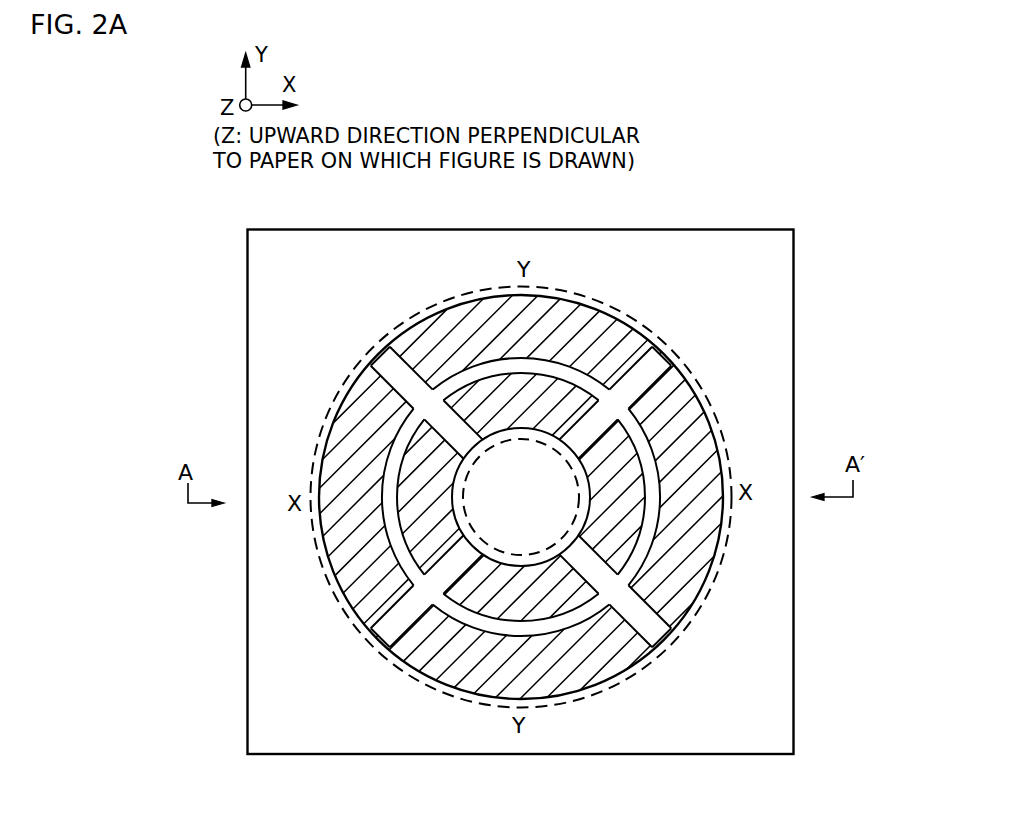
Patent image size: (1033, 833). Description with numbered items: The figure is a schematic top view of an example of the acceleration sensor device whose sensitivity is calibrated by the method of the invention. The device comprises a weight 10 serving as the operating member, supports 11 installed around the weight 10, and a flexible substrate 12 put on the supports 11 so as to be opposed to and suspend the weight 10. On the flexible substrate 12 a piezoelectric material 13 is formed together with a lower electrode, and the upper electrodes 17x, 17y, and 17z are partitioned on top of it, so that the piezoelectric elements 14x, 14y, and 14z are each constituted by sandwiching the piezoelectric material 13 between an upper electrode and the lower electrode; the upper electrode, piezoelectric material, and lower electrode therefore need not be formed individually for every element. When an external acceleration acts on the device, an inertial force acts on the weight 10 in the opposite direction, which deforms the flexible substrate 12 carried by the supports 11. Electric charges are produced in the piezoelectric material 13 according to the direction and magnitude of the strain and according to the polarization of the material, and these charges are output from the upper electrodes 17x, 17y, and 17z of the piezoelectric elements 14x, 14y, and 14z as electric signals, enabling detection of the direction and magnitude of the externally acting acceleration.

The weight 10 is at (570, 517).
The supports 11 is at (766, 690).
The flexible substrate 12 is at (343, 387).
The piezoelectric material 13 is at (380, 630).
The piezoelectric element 14x is at (708, 440).
The piezoelectric element 14y is at (485, 313).
The piezoelectric element 14z is at (427, 438).
The upper electrode 17x is at (609, 501).
The upper electrode 17y is at (551, 496).
The upper electrode 17z is at (616, 496).